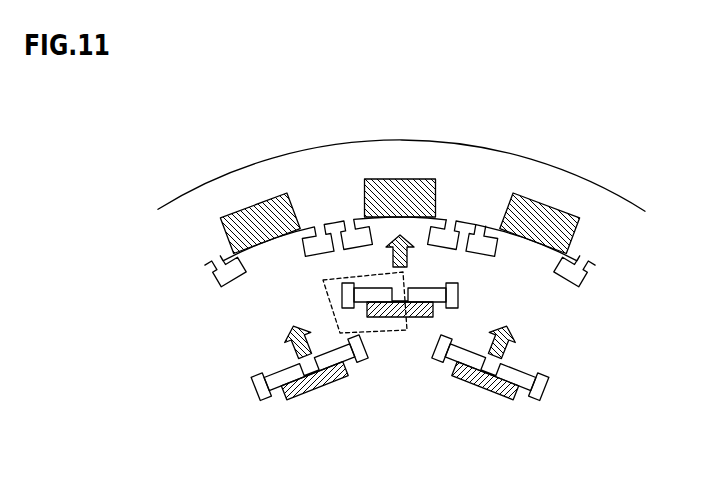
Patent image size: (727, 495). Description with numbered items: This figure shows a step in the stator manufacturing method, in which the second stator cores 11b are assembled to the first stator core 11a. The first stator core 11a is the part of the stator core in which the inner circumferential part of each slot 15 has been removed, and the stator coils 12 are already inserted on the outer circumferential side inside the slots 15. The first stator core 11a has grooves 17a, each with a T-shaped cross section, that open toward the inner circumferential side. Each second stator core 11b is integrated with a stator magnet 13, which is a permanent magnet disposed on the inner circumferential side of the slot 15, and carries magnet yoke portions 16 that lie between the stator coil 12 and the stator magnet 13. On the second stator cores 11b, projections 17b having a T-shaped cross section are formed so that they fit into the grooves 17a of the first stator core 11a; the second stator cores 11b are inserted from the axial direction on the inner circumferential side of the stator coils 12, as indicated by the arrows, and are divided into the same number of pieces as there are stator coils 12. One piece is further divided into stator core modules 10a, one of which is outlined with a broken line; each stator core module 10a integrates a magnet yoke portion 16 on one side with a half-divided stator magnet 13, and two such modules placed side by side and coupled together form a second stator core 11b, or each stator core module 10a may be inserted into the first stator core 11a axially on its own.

The stator core module 10a is at (322, 283).
The first stator core 11a is at (310, 152).
The second stator core 11b is at (458, 297).
The stator coil 12 is at (399, 164).
The stator magnet 13 is at (458, 360).
The slot 15 is at (393, 182).
The magnet yoke portion 16 is at (417, 318).
The groove 17a is at (453, 215).
The projection 17b is at (458, 305).